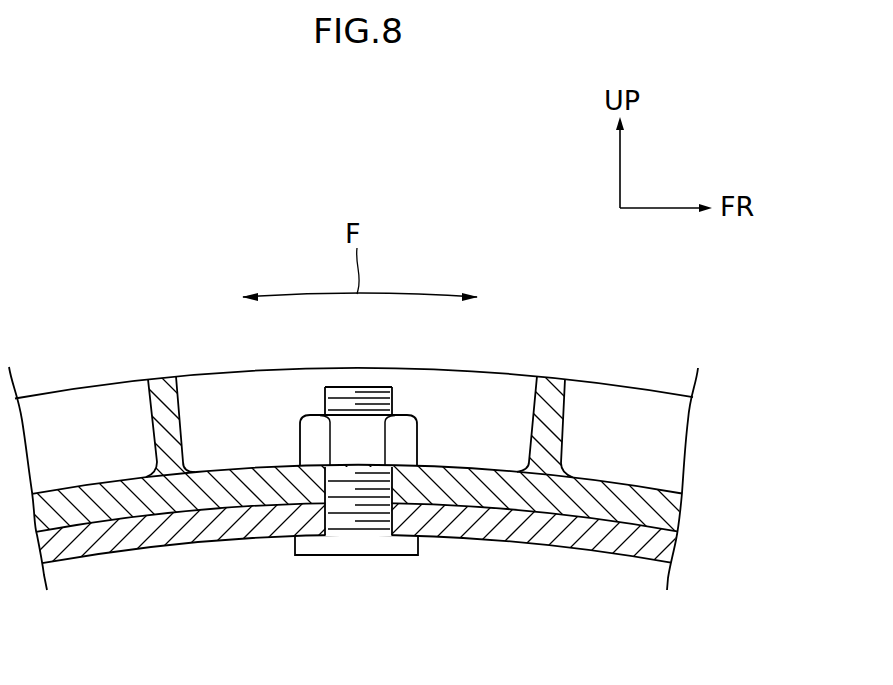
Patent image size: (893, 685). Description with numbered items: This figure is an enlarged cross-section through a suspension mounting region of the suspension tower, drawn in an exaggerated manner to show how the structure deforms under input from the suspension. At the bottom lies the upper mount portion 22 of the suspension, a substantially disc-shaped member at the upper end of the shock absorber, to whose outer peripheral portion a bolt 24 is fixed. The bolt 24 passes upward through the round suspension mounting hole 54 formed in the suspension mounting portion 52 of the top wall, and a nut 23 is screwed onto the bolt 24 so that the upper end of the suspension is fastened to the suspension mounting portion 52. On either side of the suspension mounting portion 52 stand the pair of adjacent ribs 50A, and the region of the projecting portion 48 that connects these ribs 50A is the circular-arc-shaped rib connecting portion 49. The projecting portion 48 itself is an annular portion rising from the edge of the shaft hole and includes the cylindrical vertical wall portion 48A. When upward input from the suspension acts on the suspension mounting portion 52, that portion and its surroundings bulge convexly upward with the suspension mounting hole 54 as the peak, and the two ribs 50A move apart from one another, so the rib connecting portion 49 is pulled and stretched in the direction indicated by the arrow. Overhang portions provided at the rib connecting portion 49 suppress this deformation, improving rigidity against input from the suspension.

The projecting portion 48 is at (446, 411).
The rib connecting portion 49 is at (468, 369).
The suspension mounting portion 52 is at (480, 471).
The vertical wall portion 48A is at (230, 388).
The ribs 50A is at (152, 423).
The upper mount portion 22 is at (186, 543).
The suspension mounting hole 54 is at (324, 473).
The nut 23 is at (302, 415).
The bolt 24 is at (396, 557).